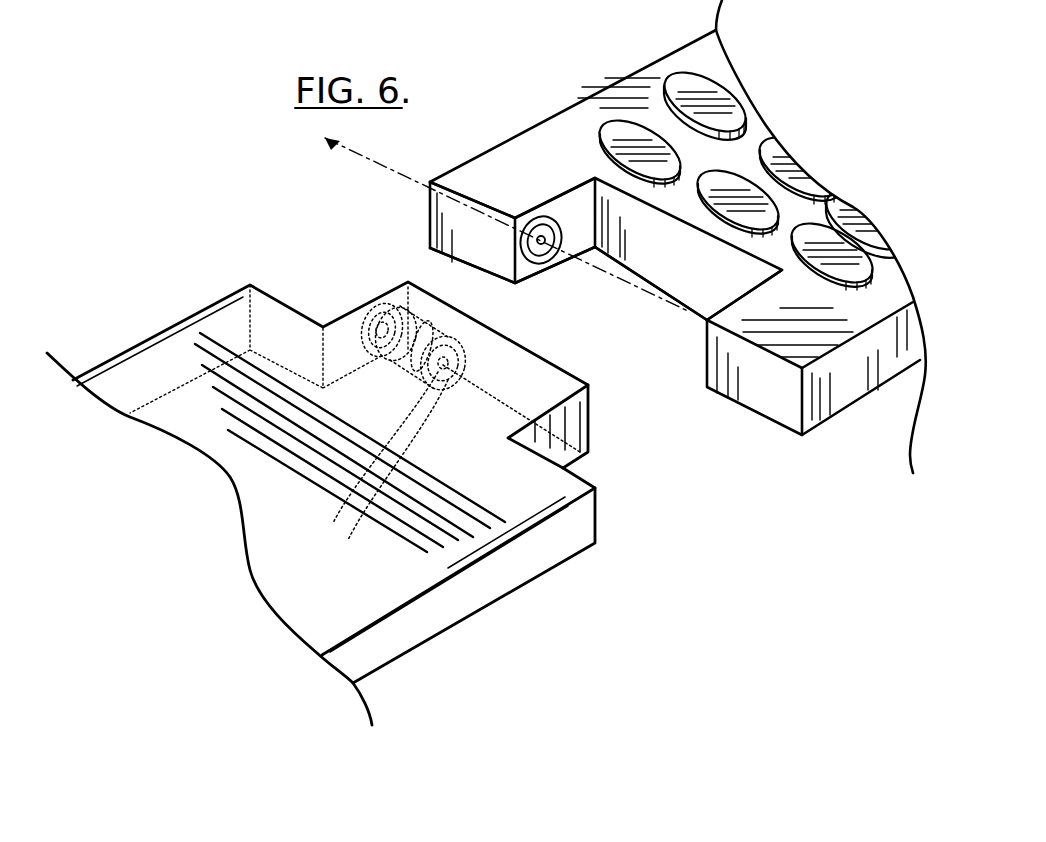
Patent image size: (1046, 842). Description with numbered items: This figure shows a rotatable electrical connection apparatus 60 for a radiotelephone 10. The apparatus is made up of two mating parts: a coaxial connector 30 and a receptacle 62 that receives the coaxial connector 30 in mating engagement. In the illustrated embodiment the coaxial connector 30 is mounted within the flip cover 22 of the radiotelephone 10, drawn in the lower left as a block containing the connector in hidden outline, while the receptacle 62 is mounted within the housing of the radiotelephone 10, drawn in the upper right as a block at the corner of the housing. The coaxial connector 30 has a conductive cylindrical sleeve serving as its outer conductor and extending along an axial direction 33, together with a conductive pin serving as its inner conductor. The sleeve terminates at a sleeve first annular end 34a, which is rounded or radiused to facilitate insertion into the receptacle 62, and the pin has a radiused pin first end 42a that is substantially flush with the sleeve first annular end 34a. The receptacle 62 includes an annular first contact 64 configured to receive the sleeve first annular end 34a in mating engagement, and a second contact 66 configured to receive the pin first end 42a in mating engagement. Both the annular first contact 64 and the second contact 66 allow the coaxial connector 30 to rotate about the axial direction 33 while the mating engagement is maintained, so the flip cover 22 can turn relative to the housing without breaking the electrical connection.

The radiotelephone 10 is at (846, 437).
The flip cover 22 is at (540, 540).
The coaxial connector 30 is at (445, 362).
The axial direction 33 is at (612, 278).
The sleeve first annular end 34a is at (368, 324).
The pin first end 42a is at (382, 302).
The rotatable electrical connection apparatus 60 is at (311, 234).
The receptacle 62 is at (571, 216).
The annular first contact 64 is at (528, 231).
The second contact 66 is at (540, 235).